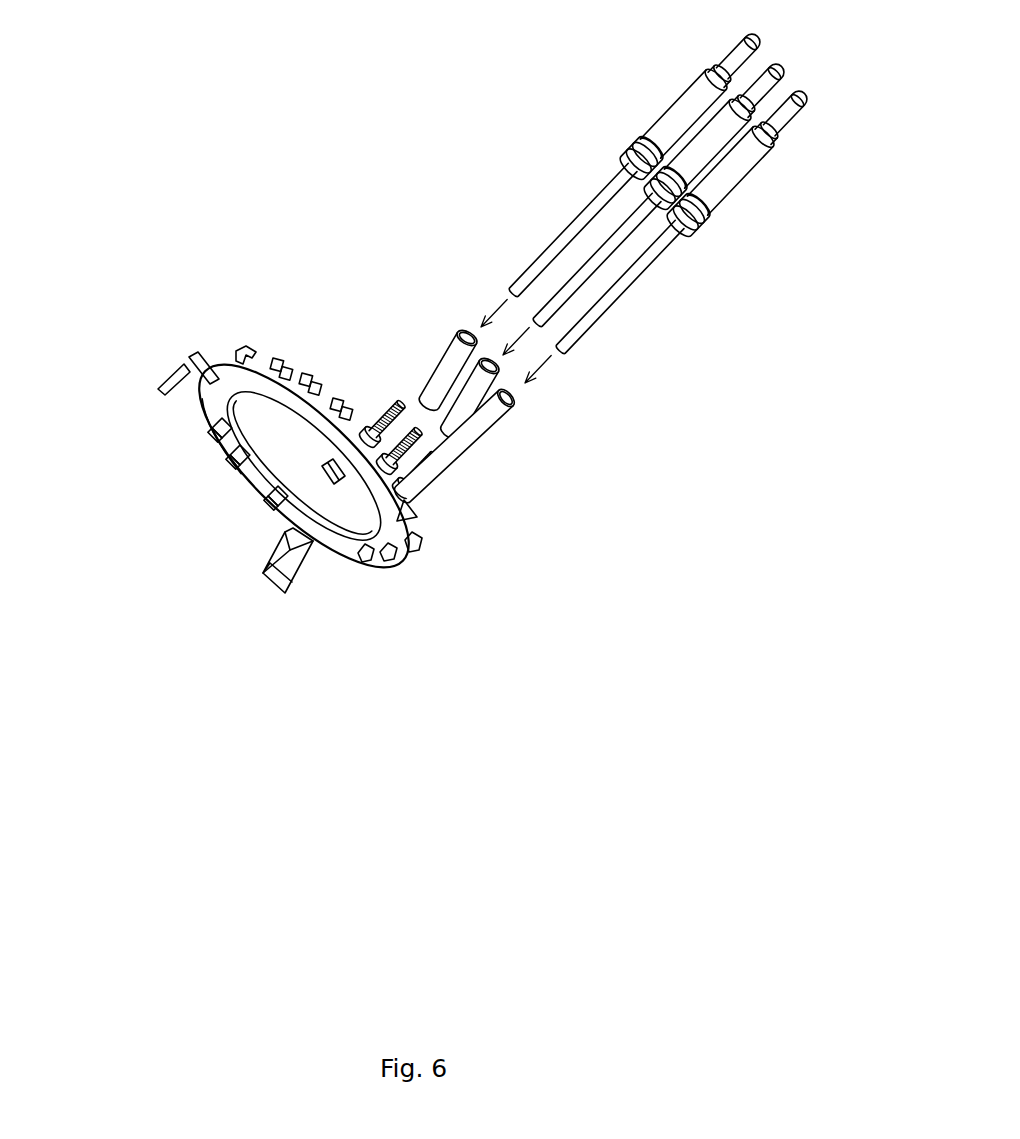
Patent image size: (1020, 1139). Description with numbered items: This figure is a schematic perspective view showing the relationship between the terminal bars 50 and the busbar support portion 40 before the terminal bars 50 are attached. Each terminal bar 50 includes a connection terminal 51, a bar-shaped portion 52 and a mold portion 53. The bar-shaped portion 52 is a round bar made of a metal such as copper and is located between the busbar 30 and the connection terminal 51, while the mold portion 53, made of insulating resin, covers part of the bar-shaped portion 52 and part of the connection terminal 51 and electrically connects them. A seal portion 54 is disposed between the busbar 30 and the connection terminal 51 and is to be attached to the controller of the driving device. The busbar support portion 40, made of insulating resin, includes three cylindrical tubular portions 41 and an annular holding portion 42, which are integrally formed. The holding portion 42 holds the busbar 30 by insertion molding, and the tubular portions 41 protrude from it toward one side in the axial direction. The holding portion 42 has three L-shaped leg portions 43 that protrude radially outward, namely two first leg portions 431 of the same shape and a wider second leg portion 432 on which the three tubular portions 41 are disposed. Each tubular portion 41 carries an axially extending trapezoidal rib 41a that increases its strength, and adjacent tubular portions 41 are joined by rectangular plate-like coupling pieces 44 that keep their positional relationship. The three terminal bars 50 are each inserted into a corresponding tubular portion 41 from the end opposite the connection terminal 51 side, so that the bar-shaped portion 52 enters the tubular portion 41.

The busbar 30 is at (203, 447).
The busbar support portion 40 is at (327, 436).
The tubular portion 41 is at (492, 416).
The rib 41a is at (447, 472).
The holding portion 42 is at (327, 553).
The leg portion 43 is at (310, 474).
The first leg portion 431 is at (160, 388).
The second leg portion 432 is at (422, 503).
The coupling piece 44 is at (423, 405).
The terminal bar 50 is at (647, 203).
The connection terminal 51 is at (732, 53).
The bar-shaped portion 52 is at (578, 220).
The mold portion 53 is at (687, 102).
The seal portion 54 is at (620, 157).